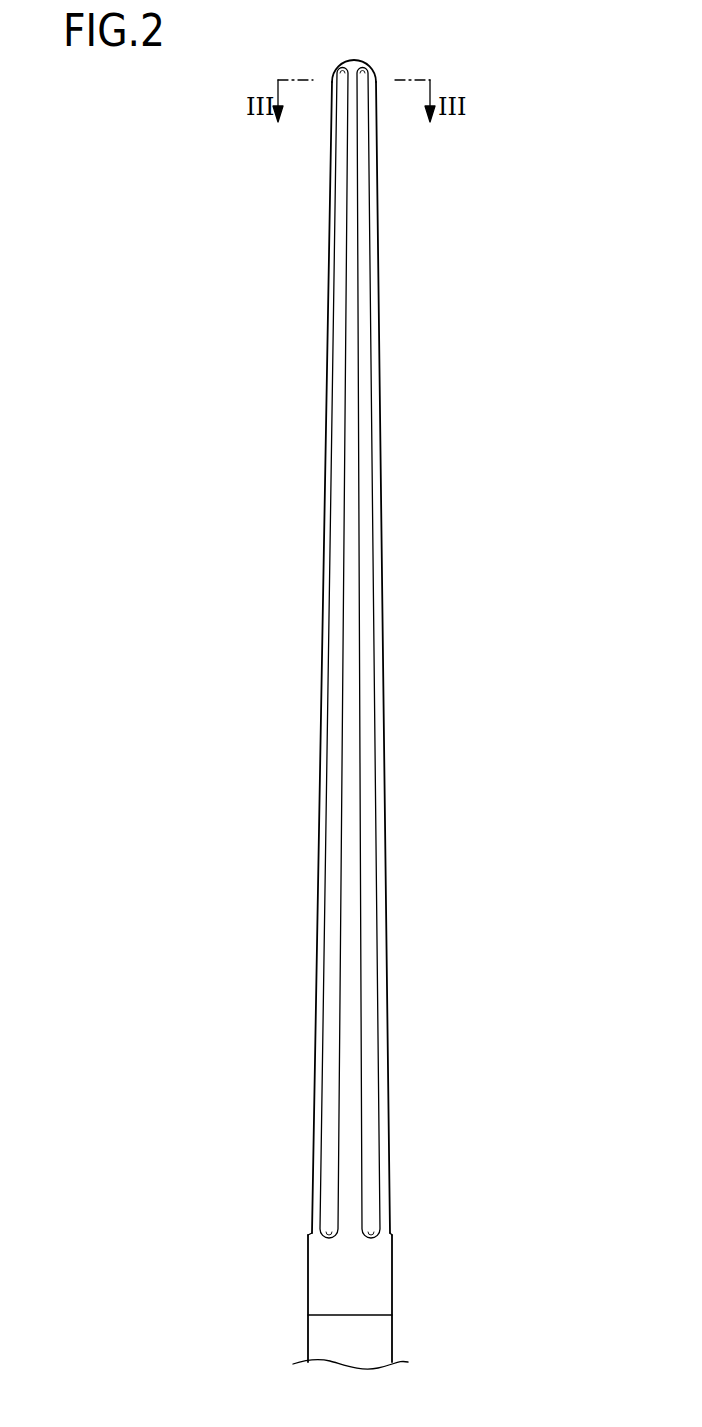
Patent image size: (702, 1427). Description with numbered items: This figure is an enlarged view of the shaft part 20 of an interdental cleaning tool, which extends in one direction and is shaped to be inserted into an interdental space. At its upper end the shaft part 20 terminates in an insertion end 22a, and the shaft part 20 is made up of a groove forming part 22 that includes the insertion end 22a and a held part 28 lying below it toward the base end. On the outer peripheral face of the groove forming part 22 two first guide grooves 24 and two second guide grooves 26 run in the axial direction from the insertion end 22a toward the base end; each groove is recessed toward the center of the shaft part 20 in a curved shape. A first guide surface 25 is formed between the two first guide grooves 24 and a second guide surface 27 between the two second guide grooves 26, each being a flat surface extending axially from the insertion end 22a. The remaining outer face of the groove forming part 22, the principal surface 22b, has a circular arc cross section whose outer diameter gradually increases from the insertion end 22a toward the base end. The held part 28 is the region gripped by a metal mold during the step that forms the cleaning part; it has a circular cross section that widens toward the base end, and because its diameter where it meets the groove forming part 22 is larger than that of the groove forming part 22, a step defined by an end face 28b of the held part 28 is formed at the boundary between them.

The shaft part 20 is at (497, 1048).
The groove forming part 22 is at (364, 629).
The insertion end 22a is at (352, 60).
The principal surface 22b is at (352, 728).
The first guide grooves 24 is at (370, 672).
The first guide surface 25 is at (386, 843).
The second guide grooves 26 is at (333, 669).
The second guide surface 27 is at (318, 846).
The held part 28 is at (355, 1288).
The end face 28b is at (310, 1238).